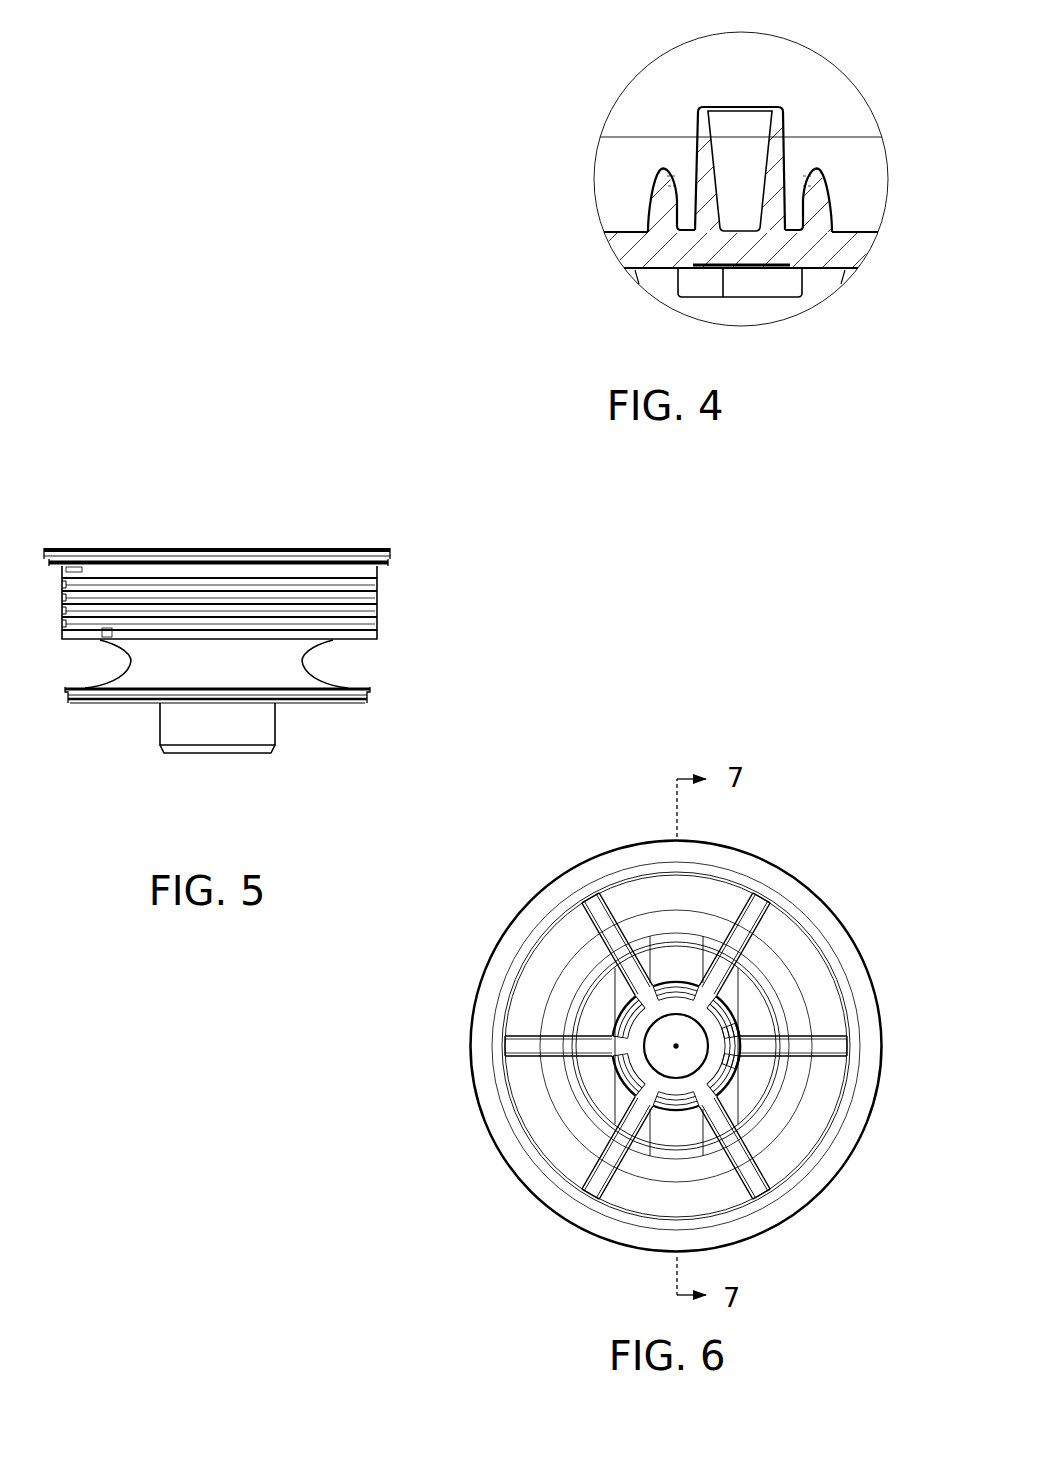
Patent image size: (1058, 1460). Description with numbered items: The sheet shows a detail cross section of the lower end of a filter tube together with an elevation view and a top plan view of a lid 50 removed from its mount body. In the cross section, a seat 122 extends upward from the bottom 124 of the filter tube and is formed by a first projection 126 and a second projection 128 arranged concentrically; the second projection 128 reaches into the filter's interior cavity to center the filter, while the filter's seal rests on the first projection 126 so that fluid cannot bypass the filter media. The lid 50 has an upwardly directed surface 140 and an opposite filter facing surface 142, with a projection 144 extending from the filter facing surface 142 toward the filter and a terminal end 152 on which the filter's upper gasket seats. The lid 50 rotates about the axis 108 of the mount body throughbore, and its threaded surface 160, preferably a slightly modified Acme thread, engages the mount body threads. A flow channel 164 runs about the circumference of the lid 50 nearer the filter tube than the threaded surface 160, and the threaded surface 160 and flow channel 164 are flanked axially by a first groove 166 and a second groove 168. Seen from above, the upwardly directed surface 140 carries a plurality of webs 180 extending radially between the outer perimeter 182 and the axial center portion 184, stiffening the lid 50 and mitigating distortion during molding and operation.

In FIG. 5, the lid 50 is at (278, 644).
In FIG. 6, the lid 50 is at (689, 1044).
In FIG. 5, the axis 108 is at (220, 490).
In FIG. 4, the seat 122 is at (842, 100).
In FIG. 4, the bottom 124 is at (626, 230).
In FIG. 4, the first projection 126 is at (657, 181).
In FIG. 4, the second projection 128 is at (697, 125).
In FIG. 5, the upwardly directed surface 140 is at (136, 548).
In FIG. 6, the upwardly directed surface 140 is at (787, 890).
In FIG. 5, the filter facing surface 142 is at (216, 768).
In FIG. 5, the projection 144 is at (277, 722).
In FIG. 5, the terminal end 152 is at (272, 752).
In FIG. 5, the threaded surface 160 is at (372, 582).
In FIG. 5, the flow channel 164 is at (392, 655).
In FIG. 5, the first groove 166 is at (397, 553).
In FIG. 5, the second groove 168 is at (377, 698).
In FIG. 6, the webs 180 is at (807, 1040).
In FIG. 6, the outer perimeter 182 is at (578, 866).
In FIG. 6, the axial center portion 184 is at (687, 1040).